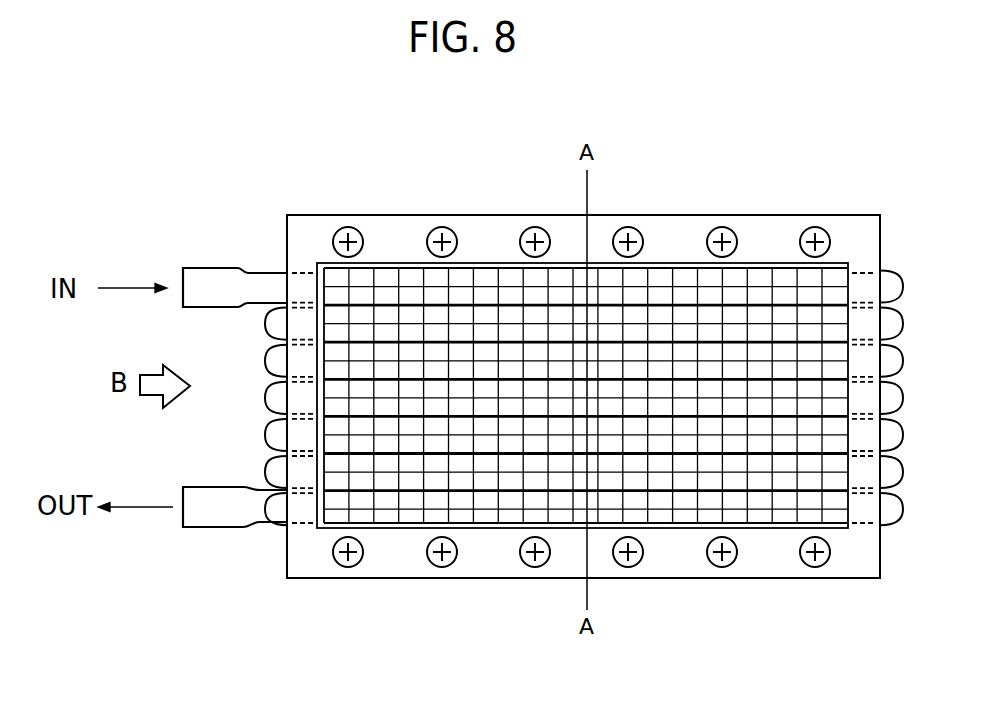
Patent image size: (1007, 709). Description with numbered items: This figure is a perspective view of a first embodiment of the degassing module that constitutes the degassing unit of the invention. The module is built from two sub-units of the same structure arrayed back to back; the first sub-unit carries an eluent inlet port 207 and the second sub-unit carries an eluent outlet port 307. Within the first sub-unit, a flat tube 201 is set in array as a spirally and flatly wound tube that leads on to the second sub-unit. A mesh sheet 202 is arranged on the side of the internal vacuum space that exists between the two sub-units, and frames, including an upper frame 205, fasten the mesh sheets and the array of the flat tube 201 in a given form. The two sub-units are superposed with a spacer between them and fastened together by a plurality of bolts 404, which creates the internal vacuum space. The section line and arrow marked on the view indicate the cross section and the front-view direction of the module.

The flat tube 201 is at (892, 512).
The mesh sheet 202 is at (573, 495).
The upper frame 205 is at (303, 570).
The eluent inlet port 207 is at (215, 268).
The eluent outlet port 307 is at (212, 527).
The bolt 404 is at (815, 227).